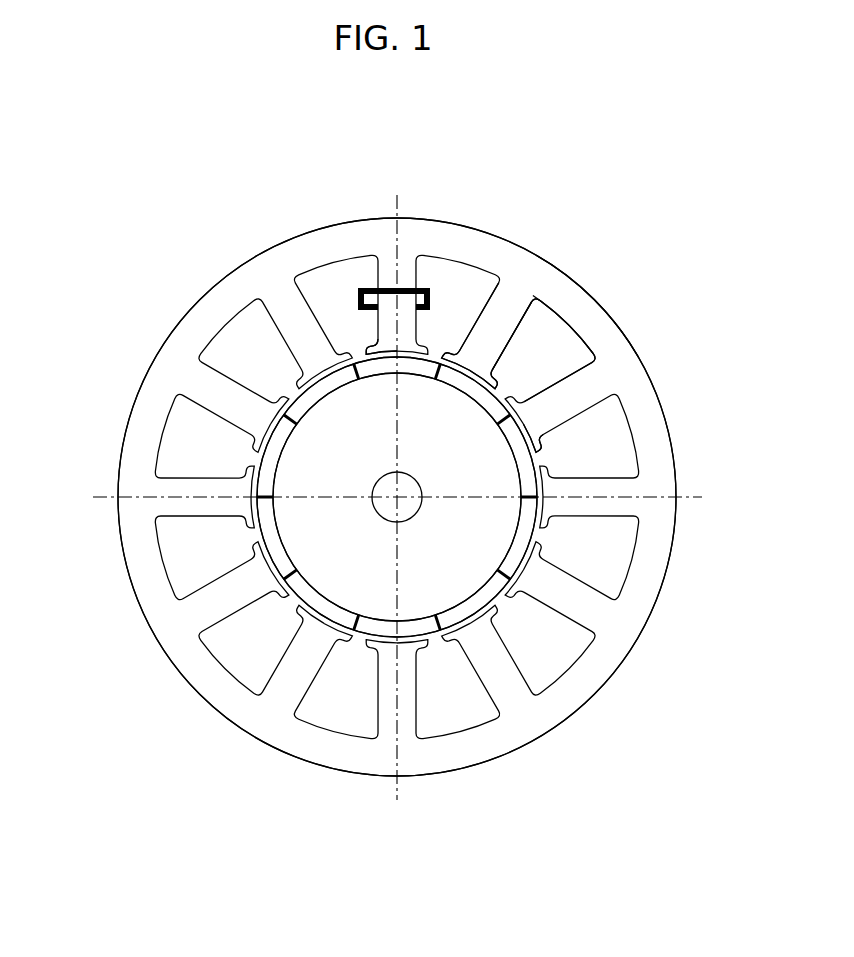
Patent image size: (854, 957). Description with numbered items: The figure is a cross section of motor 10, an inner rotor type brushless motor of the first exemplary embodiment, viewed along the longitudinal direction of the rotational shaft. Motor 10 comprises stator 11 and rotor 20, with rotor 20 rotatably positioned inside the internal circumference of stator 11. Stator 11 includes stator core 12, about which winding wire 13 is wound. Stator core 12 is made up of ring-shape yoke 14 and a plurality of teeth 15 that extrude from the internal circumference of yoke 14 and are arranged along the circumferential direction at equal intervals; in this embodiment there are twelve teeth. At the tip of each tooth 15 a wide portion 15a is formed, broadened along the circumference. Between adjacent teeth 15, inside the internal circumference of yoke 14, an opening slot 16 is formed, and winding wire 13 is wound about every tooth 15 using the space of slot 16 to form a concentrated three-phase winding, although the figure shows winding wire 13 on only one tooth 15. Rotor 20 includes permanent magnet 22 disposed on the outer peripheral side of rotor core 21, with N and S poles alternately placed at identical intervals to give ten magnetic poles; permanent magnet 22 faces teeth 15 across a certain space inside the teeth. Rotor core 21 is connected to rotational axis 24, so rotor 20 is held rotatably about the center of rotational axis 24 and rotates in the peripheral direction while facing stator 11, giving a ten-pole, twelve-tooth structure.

The motor 10 is at (215, 268).
The stator 11 is at (152, 360).
The stator core 12 is at (550, 185).
The winding wire 13 is at (398, 290).
The yoke 14 is at (552, 302).
The tooth 15 is at (495, 320).
The wide portion 15a is at (450, 348).
The slot 16 is at (563, 353).
The rotor 20 is at (255, 535).
The rotor core 21 is at (308, 545).
The permanent magnet 22 is at (300, 592).
The rotational axis 24 is at (420, 515).